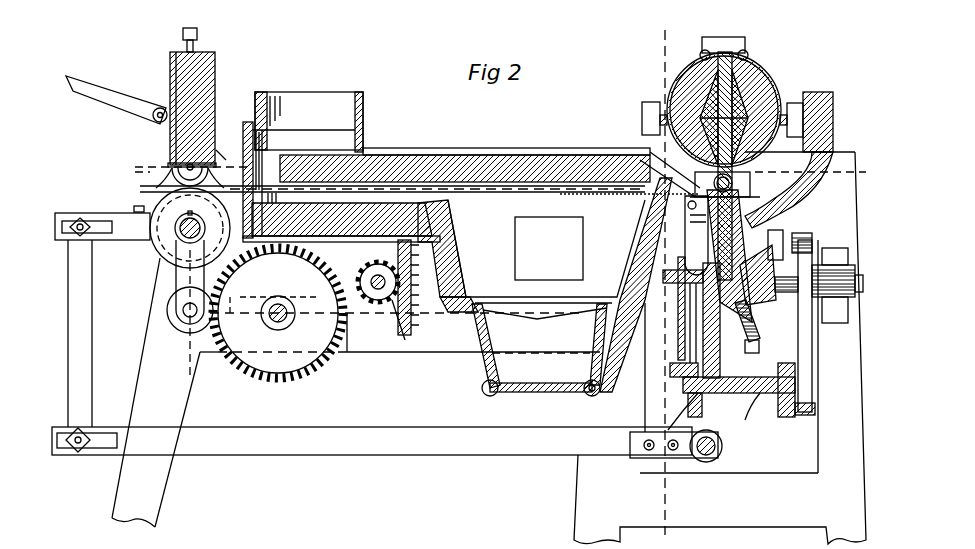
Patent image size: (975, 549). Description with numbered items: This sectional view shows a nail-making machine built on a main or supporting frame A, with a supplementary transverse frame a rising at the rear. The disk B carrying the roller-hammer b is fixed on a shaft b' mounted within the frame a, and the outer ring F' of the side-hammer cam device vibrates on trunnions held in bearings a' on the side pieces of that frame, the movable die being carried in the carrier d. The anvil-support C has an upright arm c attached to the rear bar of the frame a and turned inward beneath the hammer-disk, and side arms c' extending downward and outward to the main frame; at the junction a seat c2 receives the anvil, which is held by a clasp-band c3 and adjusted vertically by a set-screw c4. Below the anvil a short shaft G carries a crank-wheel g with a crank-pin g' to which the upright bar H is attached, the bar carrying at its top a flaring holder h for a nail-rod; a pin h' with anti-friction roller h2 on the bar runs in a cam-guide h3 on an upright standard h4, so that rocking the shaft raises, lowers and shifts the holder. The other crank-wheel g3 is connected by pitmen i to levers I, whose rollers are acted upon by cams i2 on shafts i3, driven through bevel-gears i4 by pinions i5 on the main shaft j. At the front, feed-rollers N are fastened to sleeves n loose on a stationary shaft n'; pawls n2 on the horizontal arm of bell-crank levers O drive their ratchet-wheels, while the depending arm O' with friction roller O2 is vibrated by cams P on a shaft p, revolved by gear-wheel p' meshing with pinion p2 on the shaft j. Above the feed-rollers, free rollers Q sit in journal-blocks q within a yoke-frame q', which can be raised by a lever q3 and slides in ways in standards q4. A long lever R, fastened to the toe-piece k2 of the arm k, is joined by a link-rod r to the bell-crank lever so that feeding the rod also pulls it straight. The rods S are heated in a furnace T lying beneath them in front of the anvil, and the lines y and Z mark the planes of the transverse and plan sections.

The link-rod r is at (190, 28).
The yoke-frame q' is at (207, 107).
The lever q3 is at (118, 92).
The standards q4 is at (159, 107).
The free rollers Q is at (170, 168).
The journal-blocks q is at (222, 149).
The section line z z Z is at (493, 172).
The feed-rollers N is at (172, 206).
The pawls n2 is at (150, 212).
The bell-crank levers O is at (142, 230).
The sleeves n is at (134, 280).
The stationary shaft n' is at (118, 321).
The depending arm of bell-crank lever O' is at (190, 282).
The rollers O2 is at (184, 321).
The cams P is at (310, 341).
The shaft p is at (278, 298).
The gear-wheel p' is at (294, 399).
The pinion p2 is at (372, 262).
The main shaft j is at (378, 302).
The pinions i5 is at (398, 310).
The bevel-gears i4 is at (412, 322).
The rods S is at (415, 190).
The furnace T is at (500, 212).
The upright bar H is at (640, 295).
The long lever R is at (372, 441).
The section line y y is at (661, 282).
The disk B is at (692, 86).
The roller-hammer b is at (744, 154).
The shaft b' is at (756, 59).
The outer ring F' is at (710, 38).
The supplementary frame a is at (727, 107).
The bearings a' is at (729, 105).
The upright arm c is at (797, 174).
The anvil-support C is at (788, 208).
The main frame A is at (720, 348).
The carrier d is at (690, 165).
The holder h is at (610, 255).
The clasp-band c3 is at (660, 252).
The side arms c' is at (662, 235).
The pin h' is at (651, 308).
The anti-friction roller h2 is at (700, 283).
The cam-guide h3 is at (712, 303).
The upright standard h4 is at (722, 332).
The crank-wheel g is at (722, 343).
The crank-pin g' is at (626, 425).
The crank-wheel g3 is at (787, 418).
The short shaft G is at (695, 425).
The toe-piece k2 is at (672, 460).
The arm k is at (712, 456).
The levers I is at (805, 352).
The pitmen i is at (814, 408).
The cams i2 is at (810, 300).
The shafts i3 is at (810, 256).
The seat c2 is at (754, 321).
The set-screw c4 is at (753, 353).